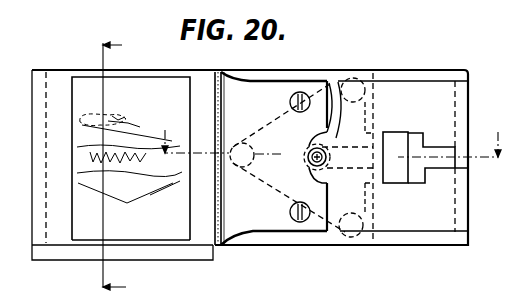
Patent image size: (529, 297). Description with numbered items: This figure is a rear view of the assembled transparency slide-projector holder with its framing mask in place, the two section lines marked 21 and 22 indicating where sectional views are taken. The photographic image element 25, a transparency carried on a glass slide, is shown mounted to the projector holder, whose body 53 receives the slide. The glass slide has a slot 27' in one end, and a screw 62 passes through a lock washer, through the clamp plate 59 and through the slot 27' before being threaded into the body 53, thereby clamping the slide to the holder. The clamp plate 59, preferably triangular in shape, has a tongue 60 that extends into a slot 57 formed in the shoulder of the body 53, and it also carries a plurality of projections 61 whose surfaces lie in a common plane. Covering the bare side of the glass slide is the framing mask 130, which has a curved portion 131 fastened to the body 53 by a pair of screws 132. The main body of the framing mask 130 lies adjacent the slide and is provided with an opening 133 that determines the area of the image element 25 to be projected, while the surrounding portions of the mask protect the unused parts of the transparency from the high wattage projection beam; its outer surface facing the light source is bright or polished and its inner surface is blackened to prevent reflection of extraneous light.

The section line 21- 21 is at (331, 133).
The section line 22- 22 is at (127, 165).
The image element 25 is at (86, 232).
The slot 27' is at (338, 109).
The body 53 is at (394, 225).
The slot 57 is at (418, 136).
The clamp plate 59 is at (281, 196).
The tongue 60 is at (397, 138).
The projections 61 is at (356, 240).
The screw 62 is at (333, 82).
The framing mask 130 is at (203, 83).
The curved portion 131 is at (240, 222).
The screws 132 is at (306, 222).
The opening 133 is at (161, 238).